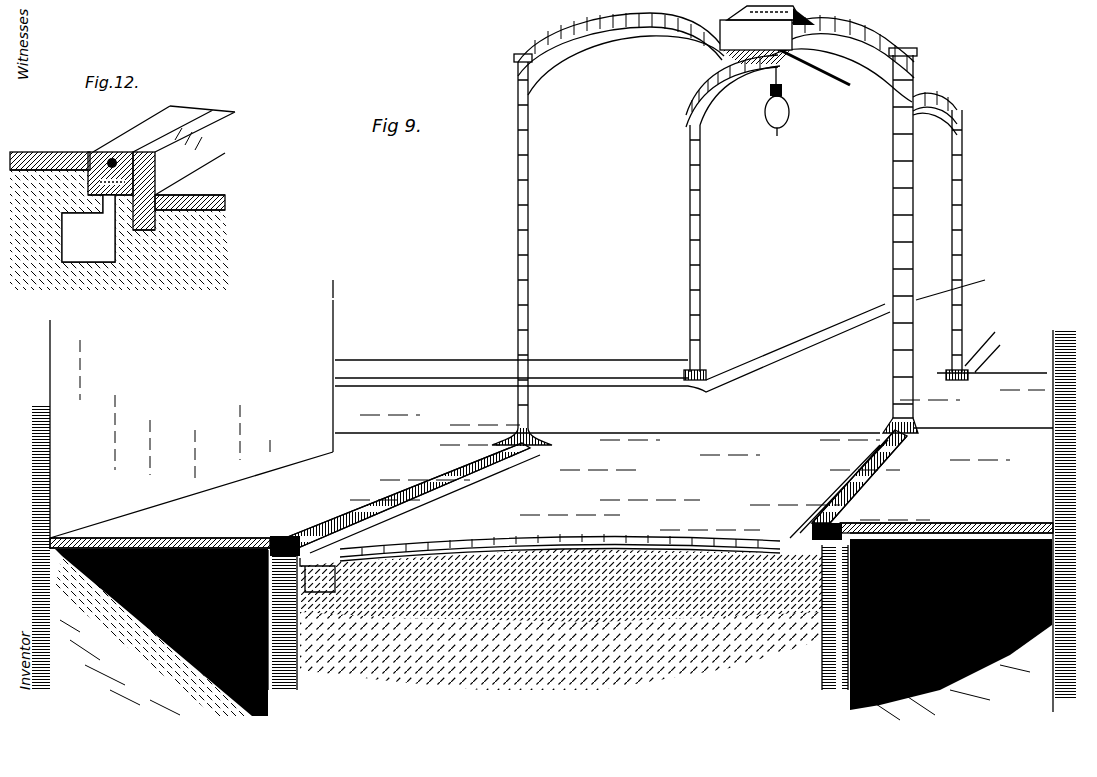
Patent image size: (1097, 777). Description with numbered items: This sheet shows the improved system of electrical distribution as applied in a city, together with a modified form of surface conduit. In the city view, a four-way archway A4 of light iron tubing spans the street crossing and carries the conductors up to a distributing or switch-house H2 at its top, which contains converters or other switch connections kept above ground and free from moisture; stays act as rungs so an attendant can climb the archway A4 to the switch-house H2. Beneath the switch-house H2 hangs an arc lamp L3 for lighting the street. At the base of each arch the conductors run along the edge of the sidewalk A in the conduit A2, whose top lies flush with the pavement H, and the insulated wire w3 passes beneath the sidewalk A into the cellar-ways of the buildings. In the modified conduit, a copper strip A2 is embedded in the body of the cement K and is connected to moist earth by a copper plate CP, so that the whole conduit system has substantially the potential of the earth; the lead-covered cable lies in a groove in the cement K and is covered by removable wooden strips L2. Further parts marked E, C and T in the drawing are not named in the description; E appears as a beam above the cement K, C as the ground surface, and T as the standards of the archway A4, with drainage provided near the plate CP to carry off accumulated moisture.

In FIG. 12, the pavement H is at (52, 155).
In FIG. 12, the cement K is at (92, 156).
In FIG. 12, the conduit cover L2 is at (113, 158).
In FIG. 9, the conduit cover L2 is at (318, 530).
In FIG. 12, the beam E is at (168, 145).
In FIG. 12, the ground surface C is at (185, 195).
In FIG. 12, the conduit A2 is at (96, 183).
In FIG. 12, the earth plate CP is at (88, 228).
In FIG. 9, the earth plate CP is at (317, 575).
In FIG. 9, the trolley pole T is at (517, 192).
In FIG. 9, the archway A4 is at (517, 286).
In FIG. 9, the switch-house H2 is at (767, 35).
In FIG. 9, the arc lamp L3 is at (866, 496).
In FIG. 9, the sidewalk A is at (191, 504).
In FIG. 9, the insulated wire w3 is at (932, 525).